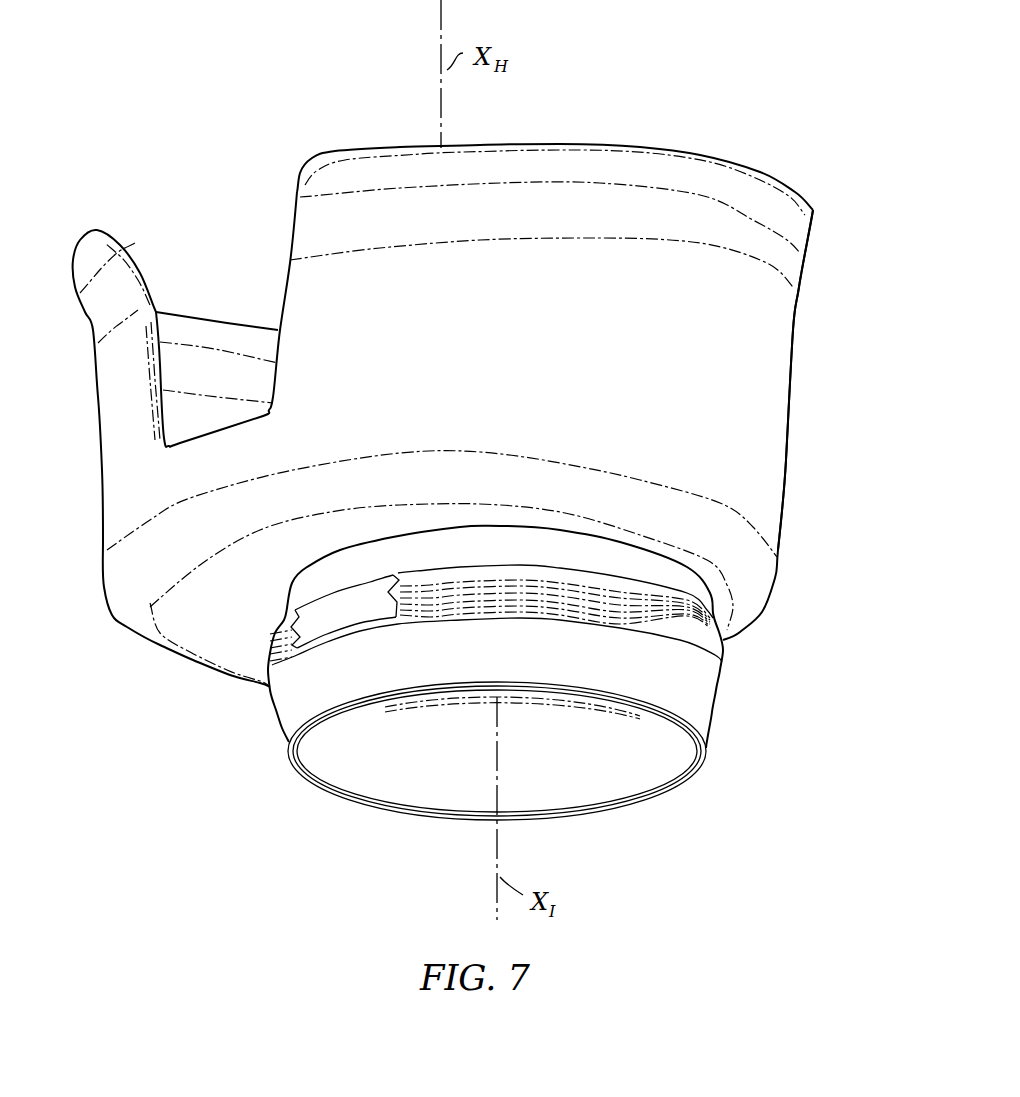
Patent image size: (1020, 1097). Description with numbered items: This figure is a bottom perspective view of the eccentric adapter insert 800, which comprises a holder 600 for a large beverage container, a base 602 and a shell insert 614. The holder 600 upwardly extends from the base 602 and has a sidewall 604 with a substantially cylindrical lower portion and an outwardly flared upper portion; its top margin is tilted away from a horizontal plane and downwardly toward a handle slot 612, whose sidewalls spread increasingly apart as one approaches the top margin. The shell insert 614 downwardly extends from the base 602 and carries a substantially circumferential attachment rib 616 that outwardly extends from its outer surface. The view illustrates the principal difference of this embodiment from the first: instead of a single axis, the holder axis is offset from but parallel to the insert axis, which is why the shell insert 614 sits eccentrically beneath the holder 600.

The holder 600 is at (813, 325).
The base 602 is at (248, 616).
The sidewall 604 is at (778, 367).
The handle slot 612 is at (173, 410).
The shell insert 614 is at (707, 717).
The attachment rib 616 is at (728, 670).
The eccentric adapter insert 800 is at (833, 450).